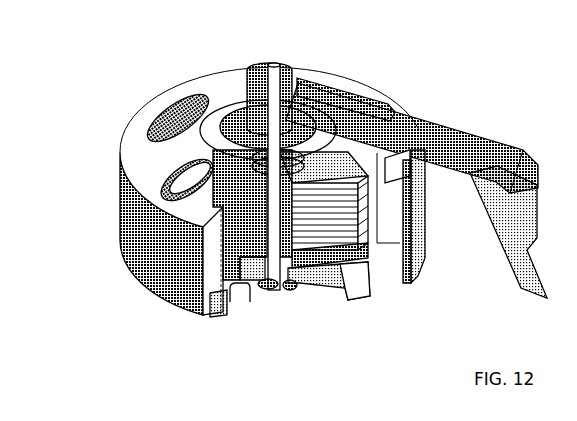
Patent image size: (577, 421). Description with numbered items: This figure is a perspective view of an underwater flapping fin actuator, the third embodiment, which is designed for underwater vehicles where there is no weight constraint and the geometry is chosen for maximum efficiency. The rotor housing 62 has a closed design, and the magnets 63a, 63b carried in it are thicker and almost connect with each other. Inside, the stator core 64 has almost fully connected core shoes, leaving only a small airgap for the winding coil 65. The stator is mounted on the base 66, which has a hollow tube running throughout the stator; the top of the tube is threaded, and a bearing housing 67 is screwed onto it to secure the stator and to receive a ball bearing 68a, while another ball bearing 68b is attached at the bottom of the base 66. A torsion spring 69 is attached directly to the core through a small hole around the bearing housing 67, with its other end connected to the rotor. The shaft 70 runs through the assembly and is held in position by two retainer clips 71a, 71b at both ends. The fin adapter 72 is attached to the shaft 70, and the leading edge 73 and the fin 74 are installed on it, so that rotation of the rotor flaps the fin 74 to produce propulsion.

The rotor housing 62 is at (122, 175).
The magnet 63a is at (395, 222).
The magnet 63b is at (208, 295).
The stator core 64 is at (370, 230).
The winding coil 65 is at (342, 292).
The base 66 is at (315, 287).
The bearing housing 67 is at (353, 108).
The ball bearing 68a is at (310, 100).
The ball bearing 68b is at (287, 288).
The torsion spring 69 is at (360, 182).
The shaft 70 is at (276, 68).
The retainer clip 71a is at (258, 90).
The retainer clip 71b is at (270, 287).
The fin adapter 72 is at (233, 103).
The leading edge 73 is at (460, 137).
The fin 74 is at (521, 152).